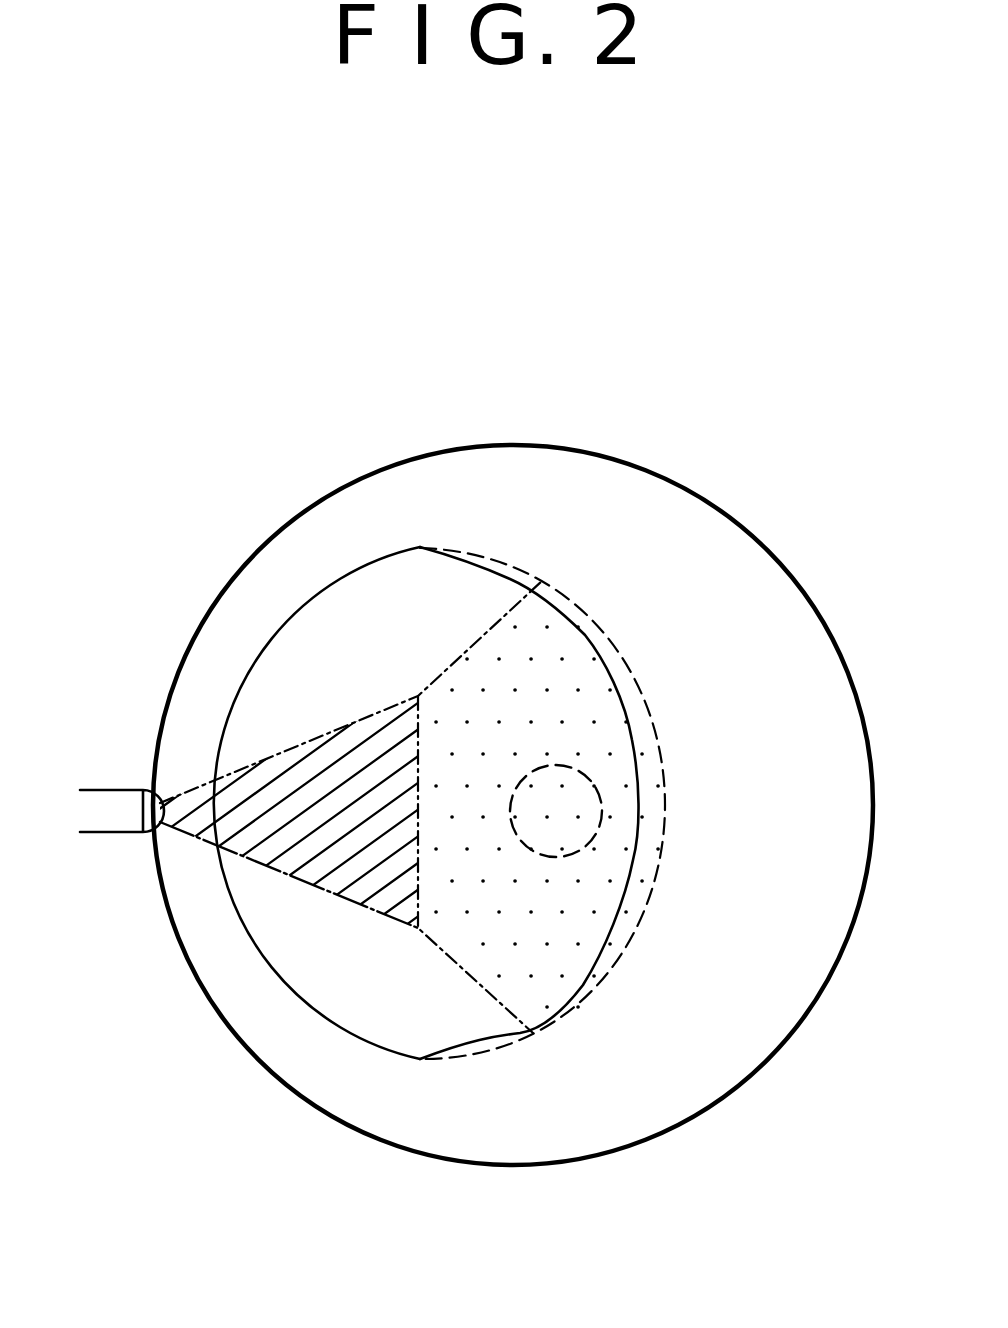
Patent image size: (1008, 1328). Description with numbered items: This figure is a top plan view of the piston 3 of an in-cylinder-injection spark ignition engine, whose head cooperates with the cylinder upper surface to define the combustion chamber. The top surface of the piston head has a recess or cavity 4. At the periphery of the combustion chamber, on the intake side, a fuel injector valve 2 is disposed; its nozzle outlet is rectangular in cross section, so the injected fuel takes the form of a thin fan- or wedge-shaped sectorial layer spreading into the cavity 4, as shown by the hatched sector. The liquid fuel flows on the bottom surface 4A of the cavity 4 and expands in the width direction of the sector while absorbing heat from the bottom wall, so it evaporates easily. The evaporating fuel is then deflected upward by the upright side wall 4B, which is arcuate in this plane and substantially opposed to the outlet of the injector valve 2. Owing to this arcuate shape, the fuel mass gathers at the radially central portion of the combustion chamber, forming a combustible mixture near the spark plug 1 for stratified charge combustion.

The spark plug 1 is at (557, 858).
The fuel injector valve 2 is at (113, 805).
The piston 3 is at (762, 612).
The cavity 4 is at (283, 616).
The bottom surface of the cavity 4A is at (387, 603).
The upright side wall of the cavity 4B is at (632, 746).